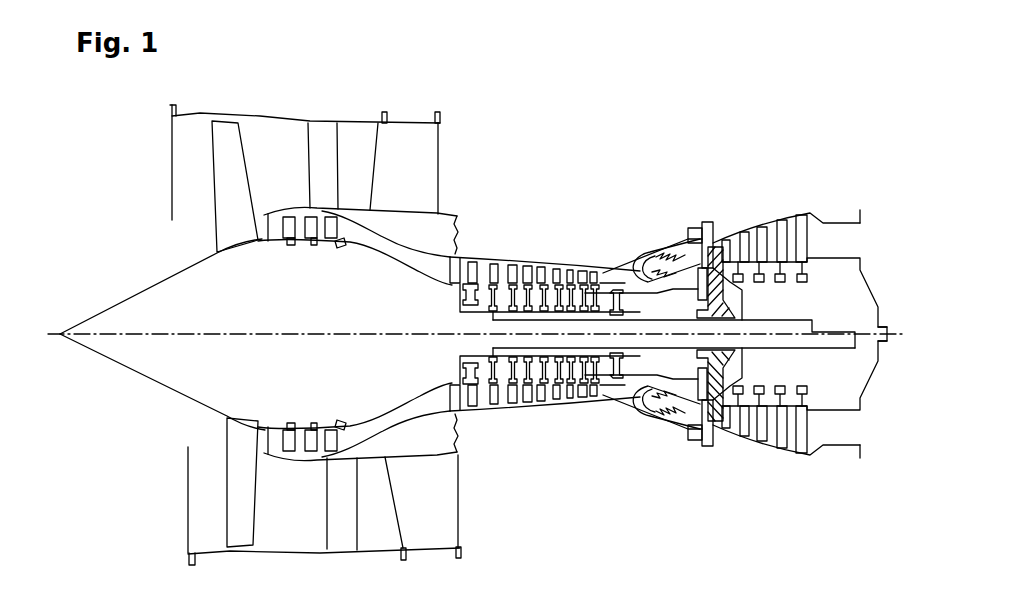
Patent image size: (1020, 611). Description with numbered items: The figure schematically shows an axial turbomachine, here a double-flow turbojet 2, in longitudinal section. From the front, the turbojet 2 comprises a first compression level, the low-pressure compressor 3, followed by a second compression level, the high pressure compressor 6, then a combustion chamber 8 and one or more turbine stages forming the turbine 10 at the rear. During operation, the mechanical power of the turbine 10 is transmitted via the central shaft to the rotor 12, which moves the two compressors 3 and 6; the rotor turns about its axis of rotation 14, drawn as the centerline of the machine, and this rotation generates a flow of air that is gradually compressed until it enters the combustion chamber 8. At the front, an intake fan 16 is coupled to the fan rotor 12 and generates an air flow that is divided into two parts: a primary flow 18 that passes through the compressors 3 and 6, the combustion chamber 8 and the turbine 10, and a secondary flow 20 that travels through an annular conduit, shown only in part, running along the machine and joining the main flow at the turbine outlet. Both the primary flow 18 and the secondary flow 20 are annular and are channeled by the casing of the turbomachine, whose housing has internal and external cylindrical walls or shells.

The turbojet 2 is at (648, 149).
The low-pressure compressor 3 is at (287, 240).
The high pressure compressor 6 is at (502, 263).
The combustion chamber 8 is at (640, 262).
The turbine 10 is at (790, 237).
The rotor 12 is at (130, 370).
The axis of rotation 14 is at (318, 337).
The intake fan 16 is at (230, 180).
The primary flow 18 is at (350, 231).
The secondary flow 20 is at (438, 154).